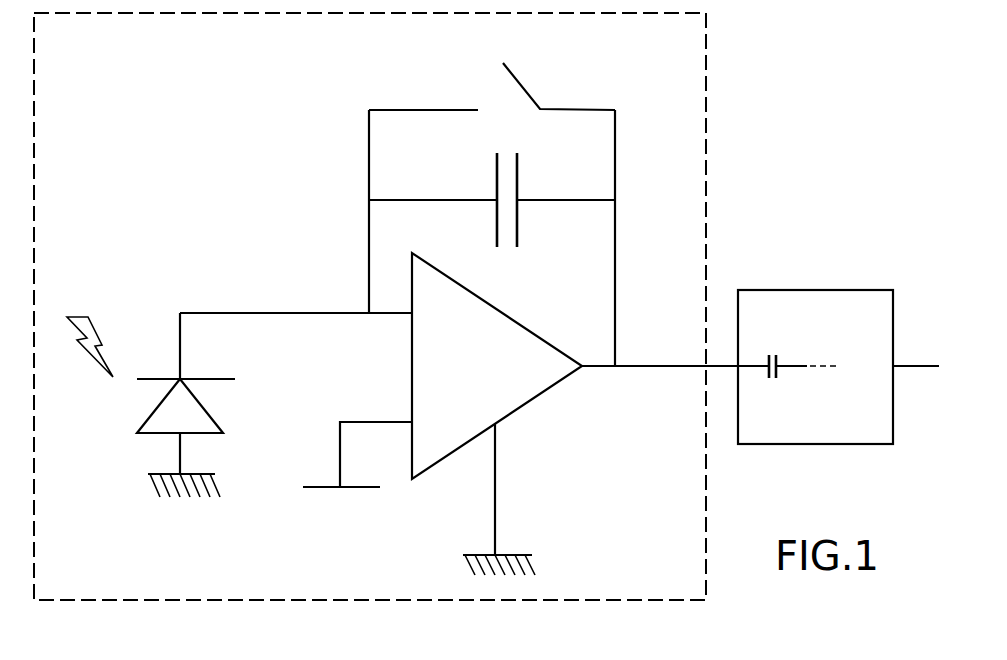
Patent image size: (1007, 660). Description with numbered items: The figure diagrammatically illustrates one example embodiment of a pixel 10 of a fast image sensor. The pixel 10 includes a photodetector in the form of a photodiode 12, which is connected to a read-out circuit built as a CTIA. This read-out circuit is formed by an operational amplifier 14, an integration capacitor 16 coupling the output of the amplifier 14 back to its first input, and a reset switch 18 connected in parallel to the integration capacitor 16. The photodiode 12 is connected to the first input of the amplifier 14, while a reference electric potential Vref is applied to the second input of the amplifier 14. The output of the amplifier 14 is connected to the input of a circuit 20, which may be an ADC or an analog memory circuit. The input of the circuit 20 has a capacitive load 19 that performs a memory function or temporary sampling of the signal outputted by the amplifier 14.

The pixel 10 is at (783, 79).
The photodiode 12 is at (195, 412).
The operational amplifier 14 is at (517, 392).
The integration capacitor 16 is at (519, 181).
The reset switch 18 is at (518, 75).
The capacitive load 19 is at (776, 363).
The circuit 20 is at (853, 300).